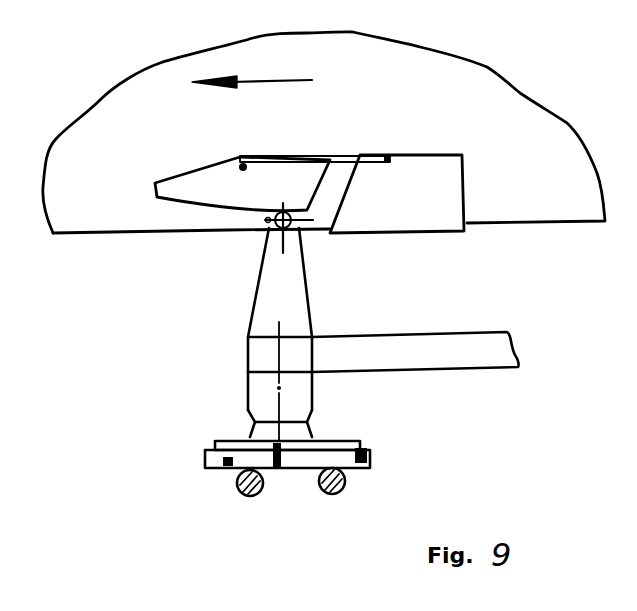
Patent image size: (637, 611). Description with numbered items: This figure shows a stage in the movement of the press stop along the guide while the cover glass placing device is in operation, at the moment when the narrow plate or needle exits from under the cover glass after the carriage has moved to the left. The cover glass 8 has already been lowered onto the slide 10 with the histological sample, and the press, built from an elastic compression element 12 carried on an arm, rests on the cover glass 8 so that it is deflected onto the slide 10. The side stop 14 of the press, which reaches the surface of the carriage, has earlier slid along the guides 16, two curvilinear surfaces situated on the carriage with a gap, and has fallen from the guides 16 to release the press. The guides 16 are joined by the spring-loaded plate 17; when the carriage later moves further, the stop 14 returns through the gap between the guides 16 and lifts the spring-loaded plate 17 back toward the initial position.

The cover glass 8 is at (355, 440).
The slide 10 is at (207, 457).
The elastic compression element 12 is at (252, 433).
The side stop 14 is at (270, 218).
The guides 16 is at (207, 168).
The spring-loaded plate 17 is at (350, 153).